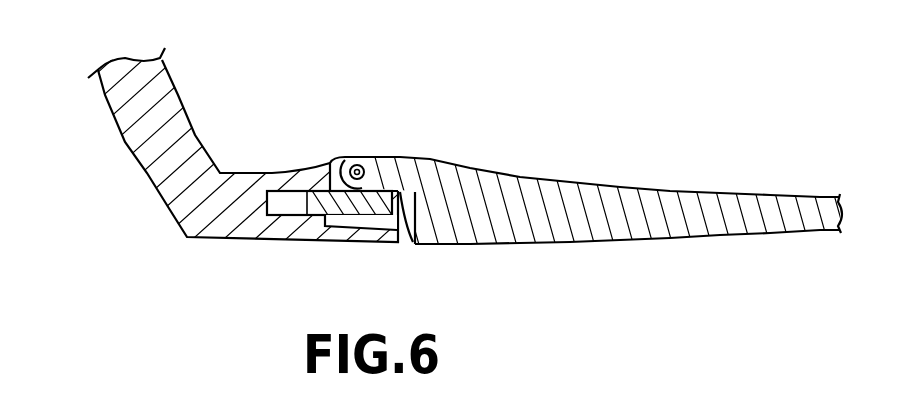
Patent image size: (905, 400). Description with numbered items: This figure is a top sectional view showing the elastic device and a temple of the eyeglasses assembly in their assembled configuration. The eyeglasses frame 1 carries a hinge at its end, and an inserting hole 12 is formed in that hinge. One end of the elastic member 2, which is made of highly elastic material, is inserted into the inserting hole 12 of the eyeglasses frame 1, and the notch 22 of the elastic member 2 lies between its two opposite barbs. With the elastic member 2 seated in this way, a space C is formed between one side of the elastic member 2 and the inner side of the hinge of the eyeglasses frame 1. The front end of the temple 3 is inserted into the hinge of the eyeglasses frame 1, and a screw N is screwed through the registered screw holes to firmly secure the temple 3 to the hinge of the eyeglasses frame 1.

The eyeglasses frame 1 is at (112, 163).
The elastic member 2 is at (320, 202).
The temple 3 is at (682, 178).
The inserting hole 12 is at (337, 157).
The notch 22 is at (287, 202).
The screw N is at (362, 166).
The space C is at (359, 222).